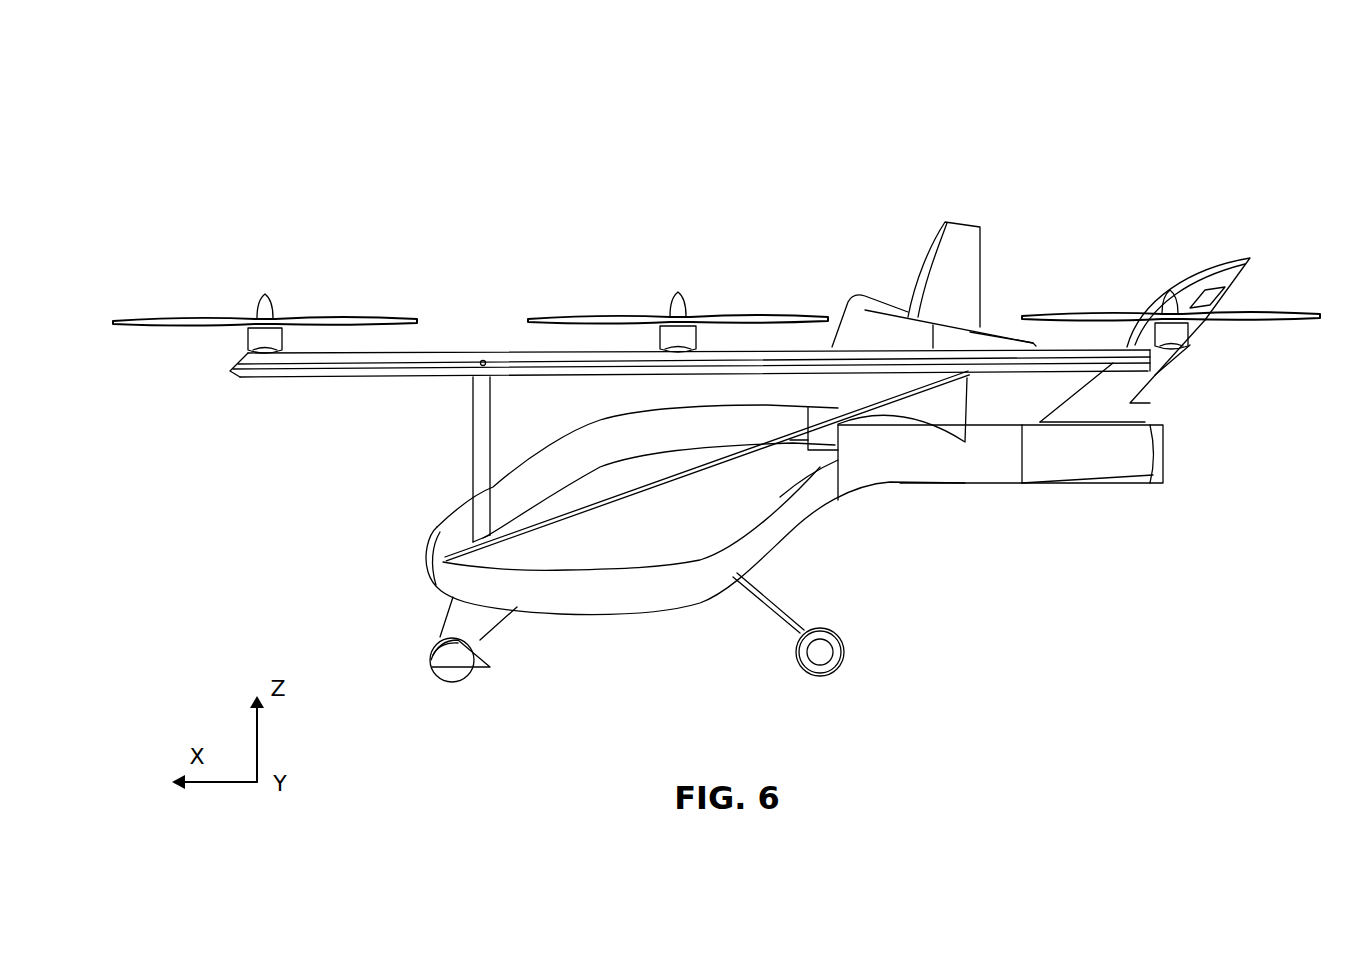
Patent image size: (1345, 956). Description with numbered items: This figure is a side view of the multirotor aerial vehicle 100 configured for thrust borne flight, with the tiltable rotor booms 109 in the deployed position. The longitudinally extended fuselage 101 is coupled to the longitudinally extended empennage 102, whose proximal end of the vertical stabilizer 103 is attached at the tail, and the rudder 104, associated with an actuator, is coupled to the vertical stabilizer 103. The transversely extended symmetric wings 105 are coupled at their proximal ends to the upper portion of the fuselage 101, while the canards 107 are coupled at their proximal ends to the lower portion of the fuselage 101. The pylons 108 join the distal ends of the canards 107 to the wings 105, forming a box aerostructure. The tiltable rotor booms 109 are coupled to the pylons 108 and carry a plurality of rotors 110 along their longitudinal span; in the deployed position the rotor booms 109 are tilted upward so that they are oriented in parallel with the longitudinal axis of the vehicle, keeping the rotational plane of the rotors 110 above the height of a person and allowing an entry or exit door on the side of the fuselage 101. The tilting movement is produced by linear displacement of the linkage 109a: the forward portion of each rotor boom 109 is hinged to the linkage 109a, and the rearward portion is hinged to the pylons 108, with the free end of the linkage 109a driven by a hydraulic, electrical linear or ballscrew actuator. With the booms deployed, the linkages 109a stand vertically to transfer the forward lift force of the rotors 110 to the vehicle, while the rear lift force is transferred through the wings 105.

The multirotor aerial vehicle 100 is at (531, 180).
The fuselage 101 is at (667, 610).
The empennage 102 is at (970, 485).
The vertical stabilizer 103 is at (1200, 275).
The rudder 104 is at (1178, 372).
The wings 105 is at (862, 293).
The canards 107 is at (507, 553).
The pylons 108 is at (667, 487).
The tiltable rotor booms 109 is at (390, 378).
The linkage 109a is at (468, 452).
The rotors 110 is at (348, 314).